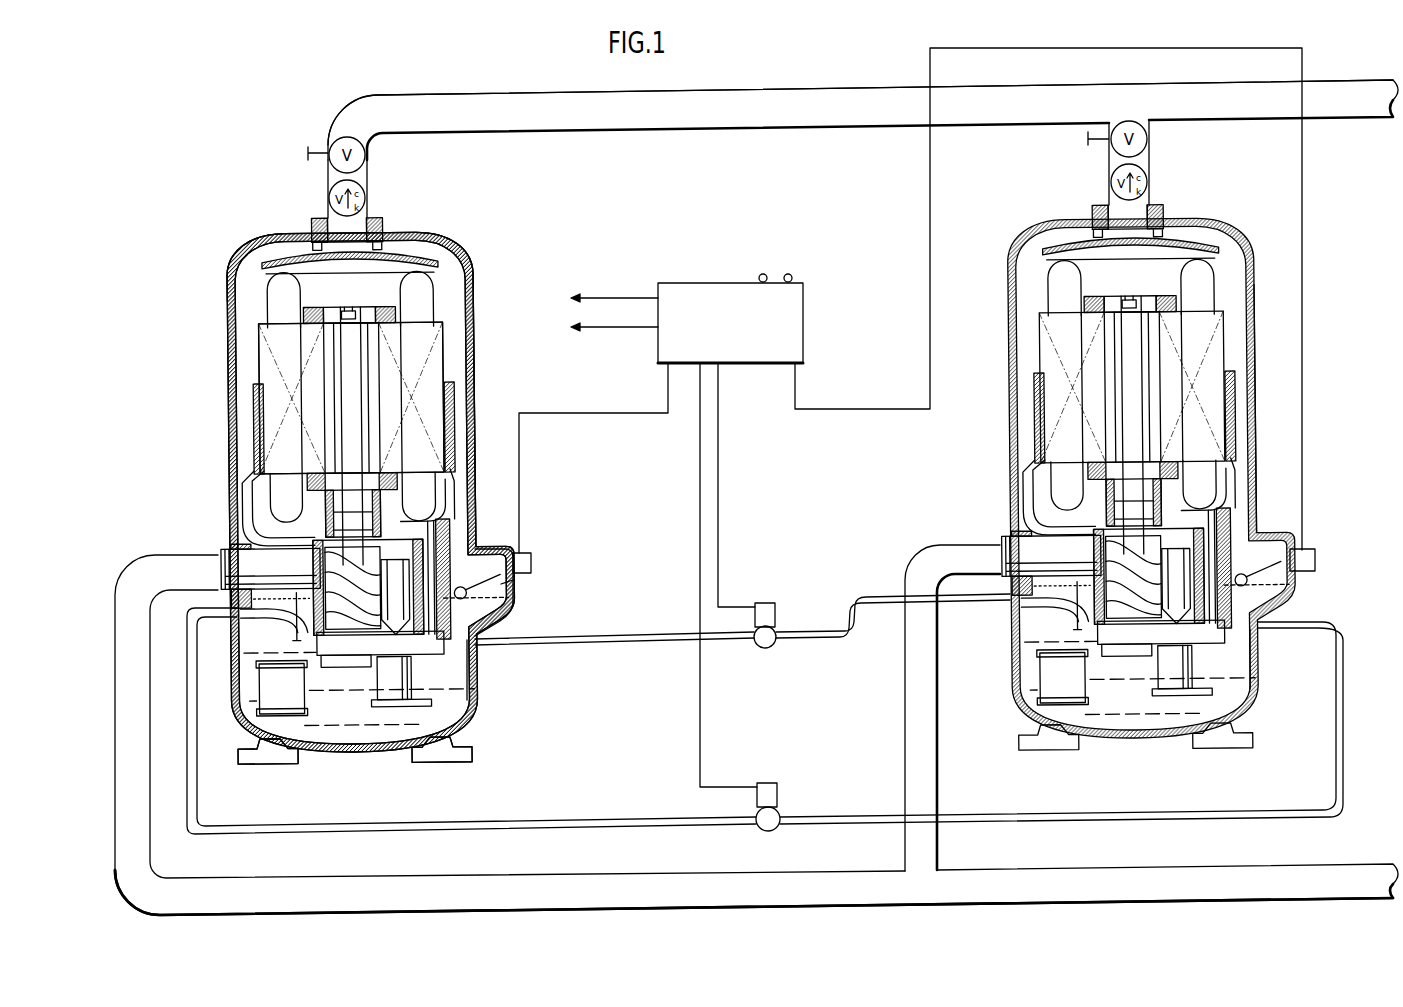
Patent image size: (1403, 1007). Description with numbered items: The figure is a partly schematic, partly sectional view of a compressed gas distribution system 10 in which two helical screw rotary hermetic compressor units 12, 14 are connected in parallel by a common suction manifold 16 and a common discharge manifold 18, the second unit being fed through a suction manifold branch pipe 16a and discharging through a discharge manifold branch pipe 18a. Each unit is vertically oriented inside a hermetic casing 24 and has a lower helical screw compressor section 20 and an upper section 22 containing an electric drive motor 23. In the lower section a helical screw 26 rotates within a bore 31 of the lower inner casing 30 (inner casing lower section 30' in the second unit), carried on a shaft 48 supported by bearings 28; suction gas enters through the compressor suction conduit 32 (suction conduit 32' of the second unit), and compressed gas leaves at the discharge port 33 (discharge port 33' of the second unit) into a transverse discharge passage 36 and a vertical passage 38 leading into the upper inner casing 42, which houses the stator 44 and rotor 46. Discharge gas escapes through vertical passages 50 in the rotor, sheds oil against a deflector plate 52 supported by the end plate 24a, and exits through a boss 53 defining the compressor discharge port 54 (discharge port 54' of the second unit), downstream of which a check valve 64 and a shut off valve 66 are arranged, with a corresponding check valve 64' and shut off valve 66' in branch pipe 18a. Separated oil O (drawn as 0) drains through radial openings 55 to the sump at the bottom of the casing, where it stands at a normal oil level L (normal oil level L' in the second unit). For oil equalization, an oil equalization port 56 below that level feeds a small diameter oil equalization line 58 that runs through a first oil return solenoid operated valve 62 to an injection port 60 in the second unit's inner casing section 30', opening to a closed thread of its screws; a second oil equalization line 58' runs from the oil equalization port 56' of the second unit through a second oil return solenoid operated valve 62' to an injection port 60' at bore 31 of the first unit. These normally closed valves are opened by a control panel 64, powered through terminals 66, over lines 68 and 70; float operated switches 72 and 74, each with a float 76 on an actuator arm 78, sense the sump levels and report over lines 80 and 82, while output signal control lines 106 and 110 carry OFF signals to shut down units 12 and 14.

The compressed gas distribution system 10 is at (1333, 210).
The helical screw rotary hermetic compressor unit 12 is at (510, 236).
The helical screw rotary hermetic compressor unit 14 is at (1248, 210).
The common suction manifold 16 is at (1045, 868).
The suction manifold branch pipe 16a is at (905, 755).
The common discharge manifold 18 is at (805, 91).
The discharge manifold branch pipe 18a is at (1108, 162).
The lower helical screw compressor section 20 is at (460, 545).
The upper section 22 is at (482, 321).
The electric drive motor 23 is at (248, 348).
The hermetic casing 24 is at (493, 423).
The cover or end plate 24a is at (468, 278).
The helical screw 26 is at (312, 580).
The bearings 28 is at (330, 502).
The lower inner casing 30 is at (368, 587).
The inner casing lower section 30' is at (1051, 555).
The bore 31 is at (342, 593).
The compressor suction conduit 32 is at (251, 559).
The suction conduit 32' is at (1024, 551).
The discharge port 33 is at (312, 688).
The discharge port 33' is at (1092, 667).
The transverse discharge passage 36 is at (430, 666).
The vertical passage 38 is at (432, 533).
The upper inner casing 42 is at (453, 396).
The stator 44 is at (430, 362).
The rotor 46 is at (390, 340).
The shaft 48 is at (346, 310).
The vertical passages 50 is at (385, 425).
The deflector plate 52 is at (428, 261).
The boss 53 is at (385, 221).
The compressor discharge port 54 is at (328, 221).
The compressor discharge port 54' is at (1101, 210).
The radial openings 55 is at (456, 507).
The oil equalization port 56 is at (494, 670).
The oil equalization port 56' is at (1274, 659).
The oil equalization line 58 is at (742, 619).
The second oil equalization line 58' is at (781, 721).
The injection port 60 is at (1035, 622).
The injection port 60' is at (256, 630).
The first oil return solenoid operated valve 62 is at (782, 619).
The second oil return solenoid operated valve 62' is at (789, 807).
The check valve 64 is at (566, 271).
The check valve 64' is at (1152, 182).
The shut off valve 66 is at (560, 209).
The shut off valve 66' is at (1152, 142).
The line 68 is at (718, 555).
The line 70 is at (699, 724).
The float operated switch 72 is at (532, 575).
The float operated switch 74 is at (1312, 548).
The float 76 is at (457, 588).
The actuator arm 78 is at (510, 581).
The line 80 is at (644, 412).
The line 82 is at (893, 408).
The output signal control line 106 is at (614, 296).
The output signal control line 110 is at (616, 328).
The normal oil level L is at (492, 603).
The normal oil level L' is at (1275, 598).
The oil 0 is at (464, 673).